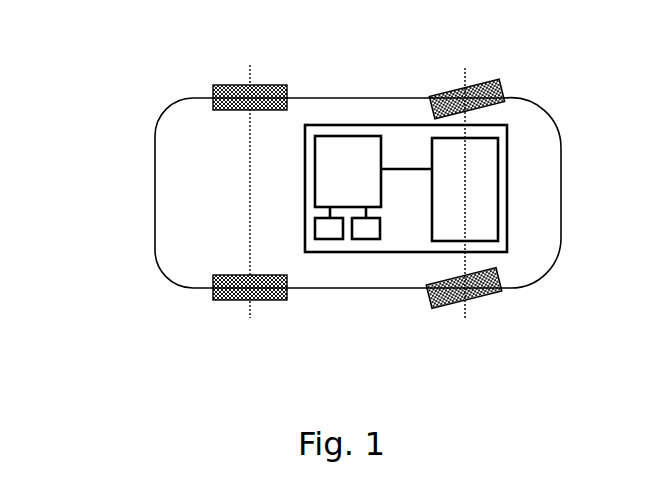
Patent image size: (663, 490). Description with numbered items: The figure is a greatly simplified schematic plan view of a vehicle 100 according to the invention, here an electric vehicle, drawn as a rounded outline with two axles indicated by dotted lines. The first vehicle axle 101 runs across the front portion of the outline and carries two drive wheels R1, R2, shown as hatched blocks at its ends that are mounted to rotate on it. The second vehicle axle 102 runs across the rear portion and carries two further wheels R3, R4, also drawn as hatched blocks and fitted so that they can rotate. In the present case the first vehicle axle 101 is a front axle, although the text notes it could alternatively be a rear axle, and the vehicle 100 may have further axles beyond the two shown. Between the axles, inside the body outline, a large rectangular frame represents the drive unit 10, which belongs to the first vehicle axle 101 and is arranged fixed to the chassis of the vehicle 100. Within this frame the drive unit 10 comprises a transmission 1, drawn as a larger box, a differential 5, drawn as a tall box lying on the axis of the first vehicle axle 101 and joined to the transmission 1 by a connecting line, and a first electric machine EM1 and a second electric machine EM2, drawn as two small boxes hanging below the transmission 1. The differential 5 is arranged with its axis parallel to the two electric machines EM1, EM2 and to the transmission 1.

The vehicle 100 is at (125, 100).
The transmission 1 is at (348, 168).
The drive unit 10 is at (400, 142).
The differential 5 is at (485, 196).
The first electric machine EM1 is at (333, 228).
The second electric machine EM2 is at (370, 228).
The drive wheel R1 is at (483, 298).
The drive wheel R2 is at (505, 82).
The wheel R3 is at (235, 290).
The wheel R4 is at (236, 96).
The first vehicle axle 101 is at (464, 327).
The second vehicle axle 102 is at (248, 325).